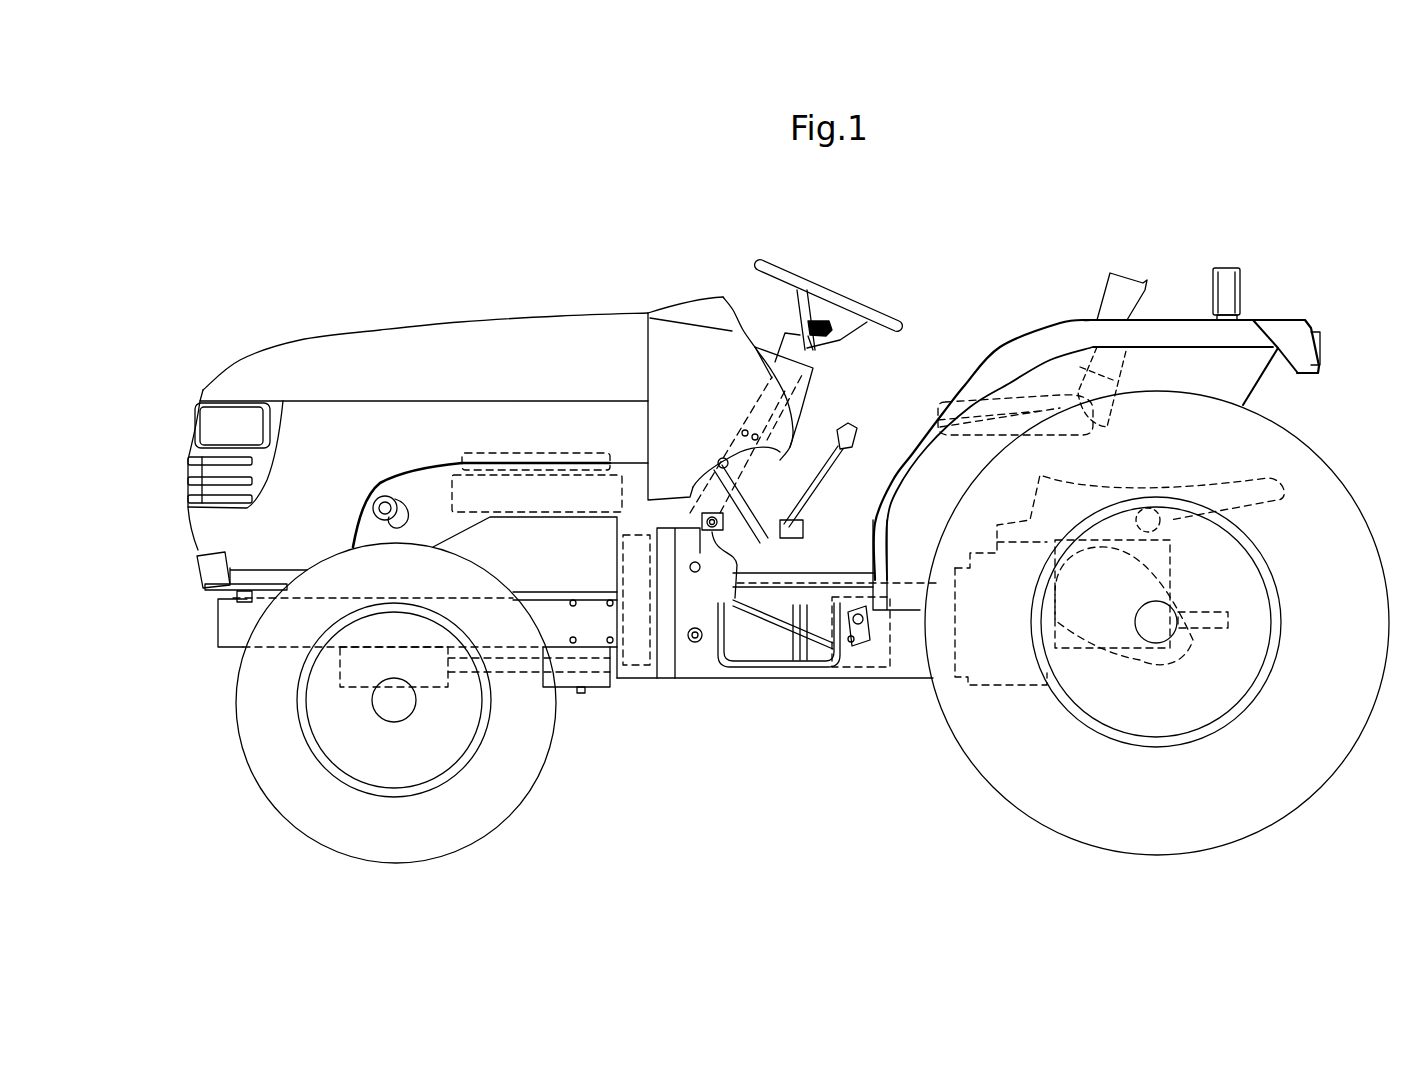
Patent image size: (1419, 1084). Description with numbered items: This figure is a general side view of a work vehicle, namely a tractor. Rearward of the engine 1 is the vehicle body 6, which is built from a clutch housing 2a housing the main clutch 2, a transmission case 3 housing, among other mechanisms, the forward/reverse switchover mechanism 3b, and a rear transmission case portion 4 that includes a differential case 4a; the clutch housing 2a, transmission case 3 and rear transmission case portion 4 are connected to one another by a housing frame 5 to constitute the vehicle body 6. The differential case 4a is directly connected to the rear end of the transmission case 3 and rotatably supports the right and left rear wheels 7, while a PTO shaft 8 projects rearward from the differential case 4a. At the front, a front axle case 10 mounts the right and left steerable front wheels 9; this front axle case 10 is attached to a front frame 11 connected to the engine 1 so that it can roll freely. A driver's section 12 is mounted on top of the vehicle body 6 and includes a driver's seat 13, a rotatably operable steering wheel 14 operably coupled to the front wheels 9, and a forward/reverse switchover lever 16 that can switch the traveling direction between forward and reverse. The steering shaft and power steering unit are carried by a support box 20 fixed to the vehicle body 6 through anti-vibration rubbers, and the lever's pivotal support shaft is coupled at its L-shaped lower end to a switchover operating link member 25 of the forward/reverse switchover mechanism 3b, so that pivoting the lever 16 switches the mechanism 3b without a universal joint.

The engine 1 is at (543, 453).
The main clutch 2 is at (623, 573).
The clutch housing 2a is at (637, 657).
The transmission case 3 is at (907, 660).
The forward/reverse switchover mechanism 3b is at (857, 677).
The rear transmission case portion 4 is at (1007, 687).
The differential case 4a is at (1228, 556).
The housing frame 5 is at (747, 640).
The vehicle body 6 is at (695, 682).
The rear wheels 7 is at (1303, 777).
The PTO shaft 8 is at (1213, 627).
The front wheels 9 is at (268, 792).
The front axle case 10 is at (345, 687).
The front frame 11 is at (218, 617).
The driver's section 12 is at (983, 273).
The driver's seat 13 is at (1118, 273).
The steering wheel 14 is at (845, 300).
The forward/reverse switchover lever 16 is at (782, 330).
The support box 20 is at (757, 465).
The switchover operating link member 25 is at (773, 623).